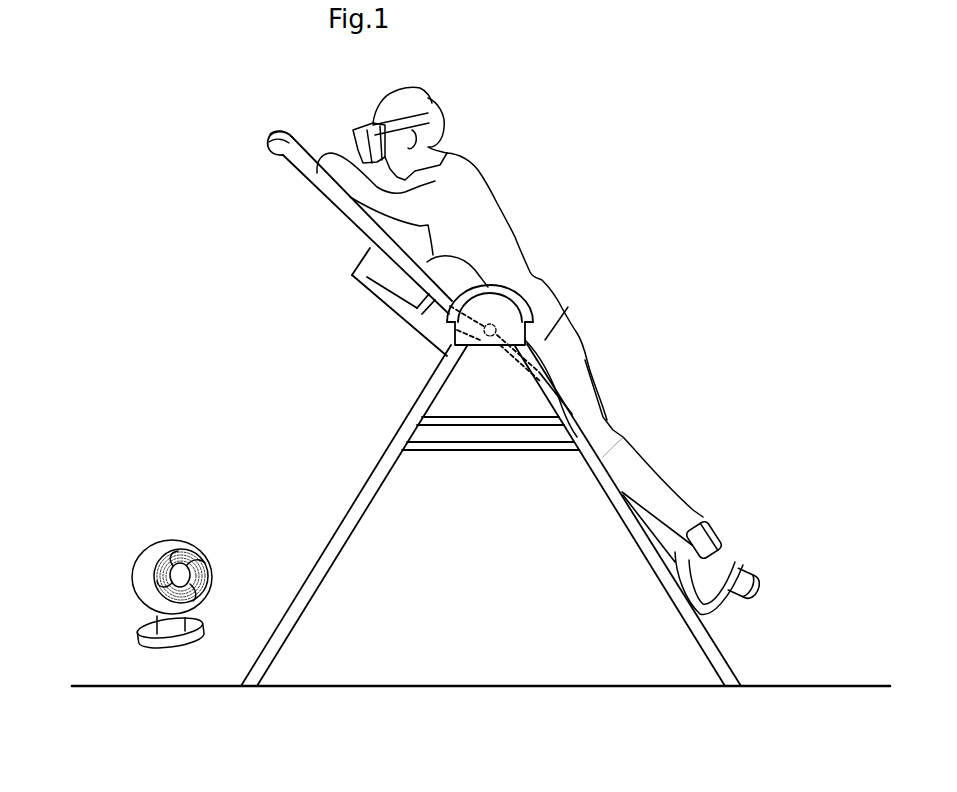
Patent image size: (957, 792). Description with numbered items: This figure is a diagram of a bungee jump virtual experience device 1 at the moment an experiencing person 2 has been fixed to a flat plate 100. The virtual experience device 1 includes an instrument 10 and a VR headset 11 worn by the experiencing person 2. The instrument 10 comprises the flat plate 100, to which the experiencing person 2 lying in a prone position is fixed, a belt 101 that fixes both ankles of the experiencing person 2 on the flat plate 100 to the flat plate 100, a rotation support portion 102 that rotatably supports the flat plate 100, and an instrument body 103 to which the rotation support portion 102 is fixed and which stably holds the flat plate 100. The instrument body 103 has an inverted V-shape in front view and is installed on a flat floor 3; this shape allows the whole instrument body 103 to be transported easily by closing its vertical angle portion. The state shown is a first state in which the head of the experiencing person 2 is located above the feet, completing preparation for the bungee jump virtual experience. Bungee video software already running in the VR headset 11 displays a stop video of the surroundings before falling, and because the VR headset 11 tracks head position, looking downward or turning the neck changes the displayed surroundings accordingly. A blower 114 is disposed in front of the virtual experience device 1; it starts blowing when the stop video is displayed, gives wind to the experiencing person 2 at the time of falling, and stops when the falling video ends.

The virtual experience device 1 is at (460, 425).
The experiencing person 2 is at (493, 193).
The flat floor 3 is at (392, 690).
The instrument 10 is at (357, 386).
The VR headset 11 is at (352, 128).
The flat plate 100 is at (302, 170).
The belt 101 is at (708, 523).
The rotation support portion 102 is at (488, 347).
The instrument body 103 is at (383, 452).
The blower 114 is at (135, 560).